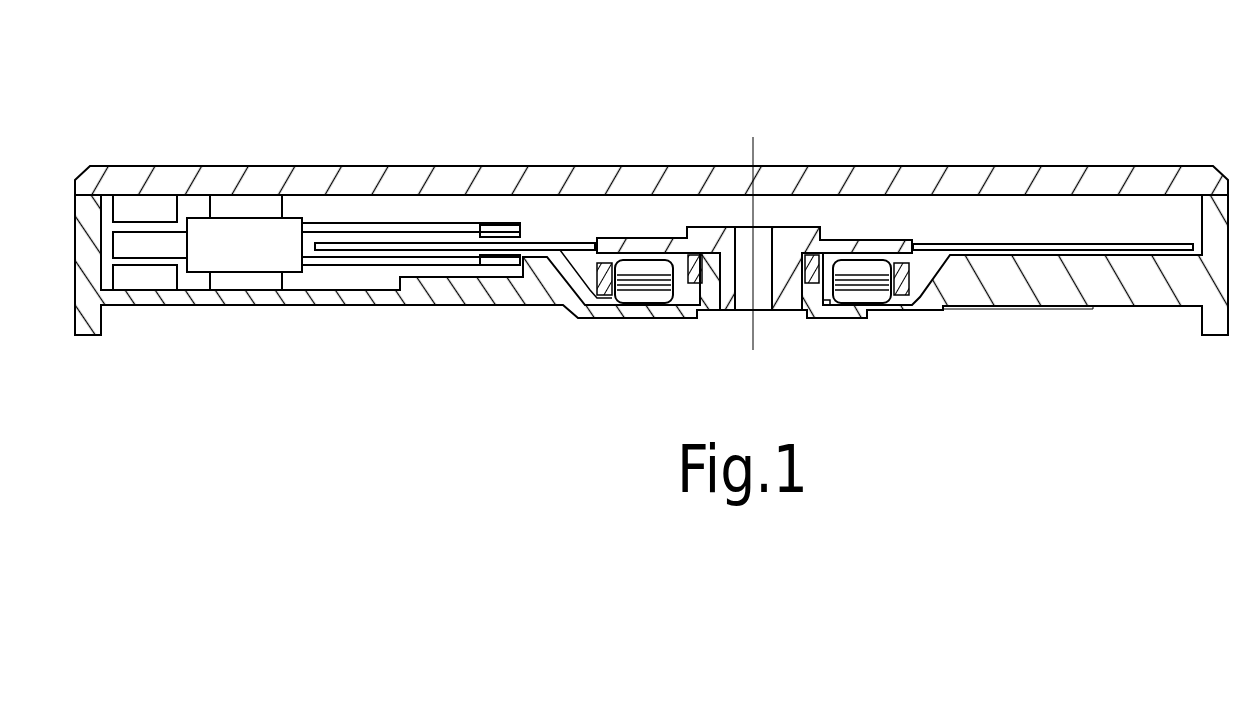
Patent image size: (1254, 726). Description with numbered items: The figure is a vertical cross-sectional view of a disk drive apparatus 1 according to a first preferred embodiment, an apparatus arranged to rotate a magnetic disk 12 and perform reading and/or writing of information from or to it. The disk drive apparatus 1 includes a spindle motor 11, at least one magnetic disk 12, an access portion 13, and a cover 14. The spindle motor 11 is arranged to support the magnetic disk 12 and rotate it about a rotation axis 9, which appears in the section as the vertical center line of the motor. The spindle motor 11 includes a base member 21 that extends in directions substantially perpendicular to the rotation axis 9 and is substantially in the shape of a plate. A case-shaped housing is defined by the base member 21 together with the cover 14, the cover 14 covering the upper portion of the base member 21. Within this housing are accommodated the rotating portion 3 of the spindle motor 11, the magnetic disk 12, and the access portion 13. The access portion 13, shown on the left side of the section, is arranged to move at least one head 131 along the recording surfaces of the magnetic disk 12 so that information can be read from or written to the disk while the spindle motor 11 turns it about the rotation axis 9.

The disk drive apparatus 1 is at (205, 145).
The rotating portion 3 is at (843, 247).
The rotation axis 9 is at (753, 150).
The spindle motor 11 is at (668, 226).
The magnetic disk 12 is at (1085, 245).
The access portion 13 is at (343, 215).
The head 131 is at (500, 228).
The cover 14 is at (960, 183).
The base member 21 is at (828, 305).